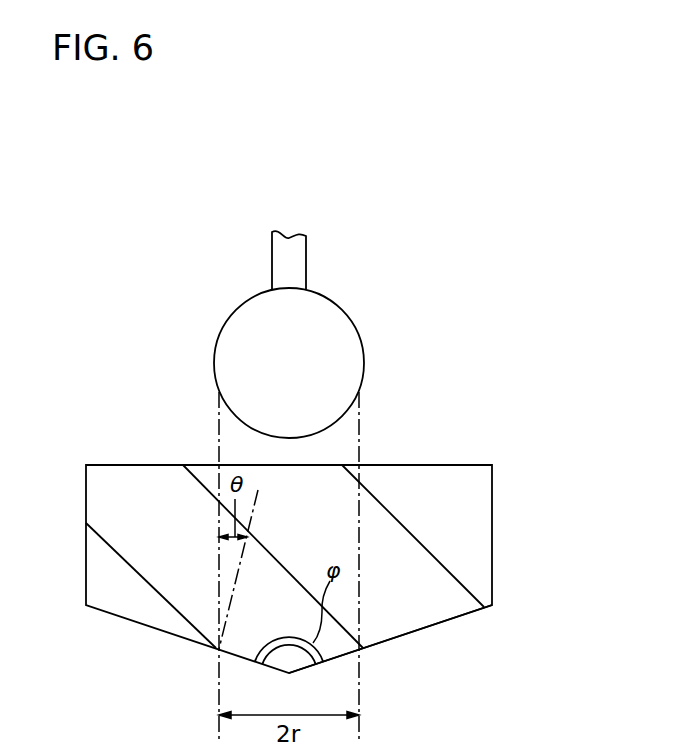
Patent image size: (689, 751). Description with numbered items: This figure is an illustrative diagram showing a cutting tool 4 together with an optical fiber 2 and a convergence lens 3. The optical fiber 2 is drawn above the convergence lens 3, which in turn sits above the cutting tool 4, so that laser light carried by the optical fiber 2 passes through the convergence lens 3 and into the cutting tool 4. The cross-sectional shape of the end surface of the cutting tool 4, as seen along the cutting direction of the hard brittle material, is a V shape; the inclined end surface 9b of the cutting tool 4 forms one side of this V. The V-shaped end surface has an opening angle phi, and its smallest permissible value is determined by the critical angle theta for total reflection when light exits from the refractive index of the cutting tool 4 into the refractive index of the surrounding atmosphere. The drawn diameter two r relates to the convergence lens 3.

The optical fiber 2 is at (272, 260).
The convergence lens 3 is at (364, 363).
The cutting tool 4 is at (501, 458).
The end surface of cutting tool 9b is at (437, 623).